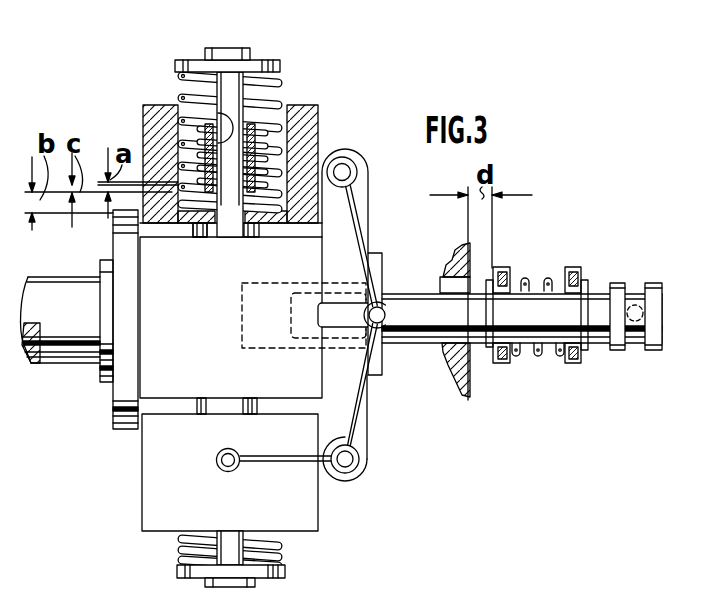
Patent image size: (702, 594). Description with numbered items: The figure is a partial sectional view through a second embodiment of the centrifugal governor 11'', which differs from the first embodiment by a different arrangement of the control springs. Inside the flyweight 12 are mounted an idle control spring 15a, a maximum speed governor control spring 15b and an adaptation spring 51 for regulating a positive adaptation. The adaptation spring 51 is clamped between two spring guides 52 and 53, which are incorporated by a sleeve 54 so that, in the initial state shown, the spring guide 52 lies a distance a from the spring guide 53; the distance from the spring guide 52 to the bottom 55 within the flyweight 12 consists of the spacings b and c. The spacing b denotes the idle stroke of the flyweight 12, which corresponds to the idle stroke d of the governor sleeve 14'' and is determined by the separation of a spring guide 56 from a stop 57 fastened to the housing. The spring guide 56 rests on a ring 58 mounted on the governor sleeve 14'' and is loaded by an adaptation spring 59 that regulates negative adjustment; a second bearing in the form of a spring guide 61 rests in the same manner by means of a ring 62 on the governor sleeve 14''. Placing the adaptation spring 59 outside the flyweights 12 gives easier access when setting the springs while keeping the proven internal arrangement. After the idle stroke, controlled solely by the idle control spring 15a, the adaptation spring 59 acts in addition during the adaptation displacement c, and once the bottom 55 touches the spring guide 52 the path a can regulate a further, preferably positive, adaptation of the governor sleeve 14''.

The centrifugal governor 11'' is at (95, 347).
The flyweight 12 is at (147, 126).
The governor sleeve 14'' is at (394, 352).
The idle control spring 15a is at (278, 78).
The maximum speed governor control spring 15b is at (262, 90).
The adaptation spring 51 is at (300, 123).
The spring guide 52 is at (319, 173).
The spring guide 53 is at (263, 147).
The sleeve 54 is at (214, 108).
The bottom 55 is at (198, 238).
The spring guide 56 is at (497, 272).
The stop 57 is at (470, 250).
The ring 58 is at (487, 348).
The adaptation spring 59 is at (540, 352).
The spring guide 61 is at (578, 268).
The ring 62 is at (587, 278).